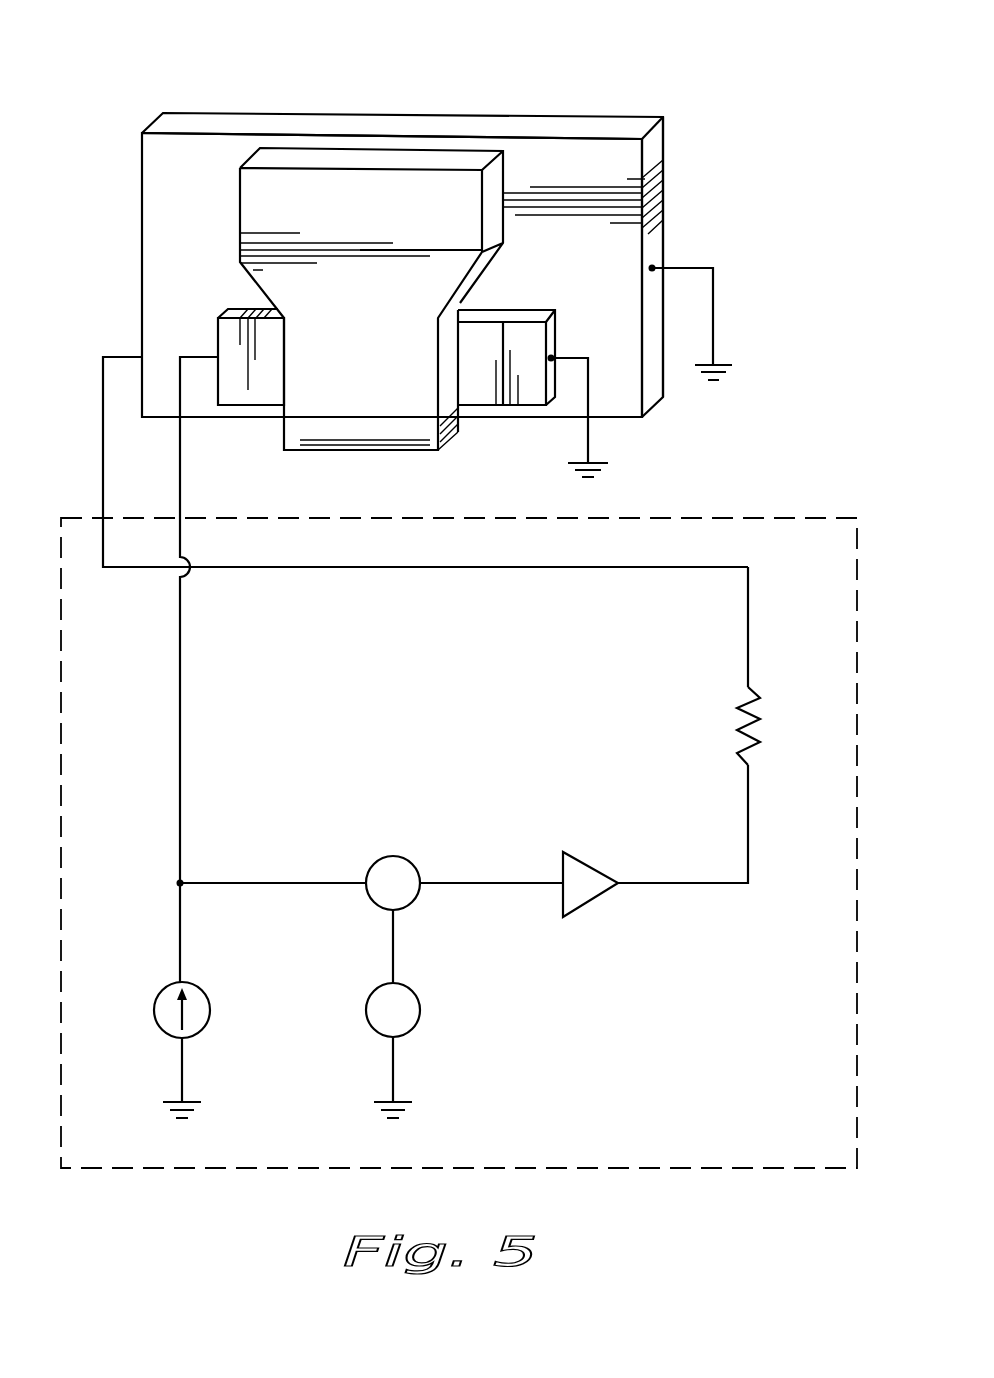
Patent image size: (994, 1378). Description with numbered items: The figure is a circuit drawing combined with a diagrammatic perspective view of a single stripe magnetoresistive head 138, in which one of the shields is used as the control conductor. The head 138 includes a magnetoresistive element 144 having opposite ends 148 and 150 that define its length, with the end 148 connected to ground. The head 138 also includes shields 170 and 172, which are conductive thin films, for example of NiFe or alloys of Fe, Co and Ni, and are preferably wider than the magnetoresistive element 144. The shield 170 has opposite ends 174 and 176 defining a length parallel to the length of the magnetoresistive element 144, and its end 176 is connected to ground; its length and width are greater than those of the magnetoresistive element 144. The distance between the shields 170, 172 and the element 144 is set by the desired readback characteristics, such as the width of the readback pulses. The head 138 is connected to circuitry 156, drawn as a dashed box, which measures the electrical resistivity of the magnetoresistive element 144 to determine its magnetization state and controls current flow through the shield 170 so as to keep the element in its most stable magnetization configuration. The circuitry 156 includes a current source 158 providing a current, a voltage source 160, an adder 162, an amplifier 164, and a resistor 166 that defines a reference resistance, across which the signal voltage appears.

The magnetoresistive head 138 is at (668, 45).
The end of shield 174 is at (142, 178).
The shield 170 is at (566, 128).
The end of shield 176 is at (653, 238).
The shield 172 is at (386, 335).
The end of magnetoresistive element 150 is at (218, 341).
The magnetoresistive element 144 is at (269, 380).
The end of magnetoresistive element 148 is at (552, 383).
The circuitry 156 is at (700, 1168).
The current source 158 is at (210, 1015).
The voltage source 160 is at (421, 1018).
The adder 162 is at (393, 856).
The amplifier 164 is at (597, 902).
The resistor 166 is at (726, 686).